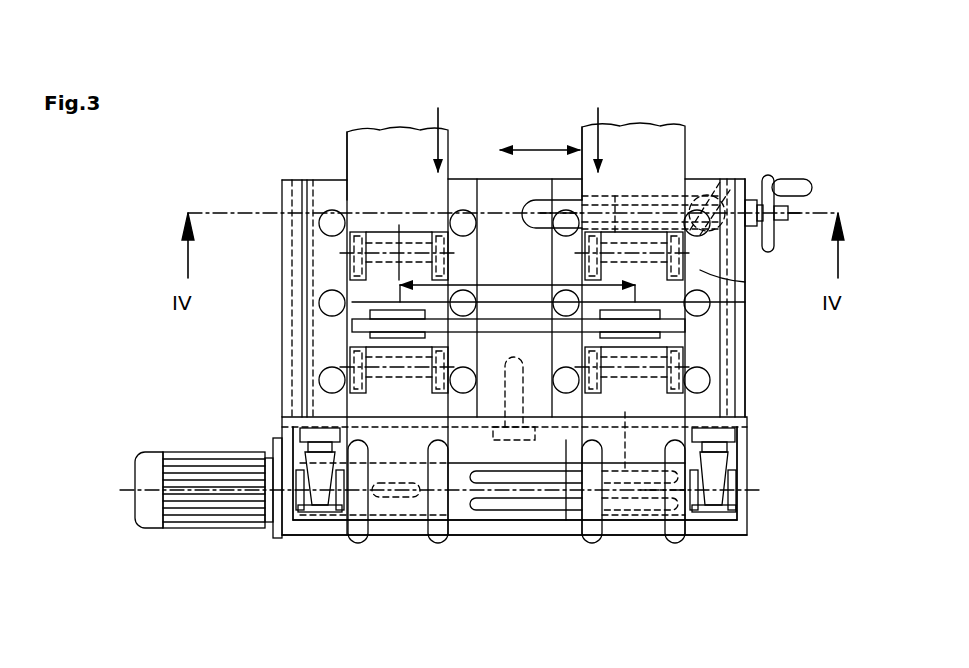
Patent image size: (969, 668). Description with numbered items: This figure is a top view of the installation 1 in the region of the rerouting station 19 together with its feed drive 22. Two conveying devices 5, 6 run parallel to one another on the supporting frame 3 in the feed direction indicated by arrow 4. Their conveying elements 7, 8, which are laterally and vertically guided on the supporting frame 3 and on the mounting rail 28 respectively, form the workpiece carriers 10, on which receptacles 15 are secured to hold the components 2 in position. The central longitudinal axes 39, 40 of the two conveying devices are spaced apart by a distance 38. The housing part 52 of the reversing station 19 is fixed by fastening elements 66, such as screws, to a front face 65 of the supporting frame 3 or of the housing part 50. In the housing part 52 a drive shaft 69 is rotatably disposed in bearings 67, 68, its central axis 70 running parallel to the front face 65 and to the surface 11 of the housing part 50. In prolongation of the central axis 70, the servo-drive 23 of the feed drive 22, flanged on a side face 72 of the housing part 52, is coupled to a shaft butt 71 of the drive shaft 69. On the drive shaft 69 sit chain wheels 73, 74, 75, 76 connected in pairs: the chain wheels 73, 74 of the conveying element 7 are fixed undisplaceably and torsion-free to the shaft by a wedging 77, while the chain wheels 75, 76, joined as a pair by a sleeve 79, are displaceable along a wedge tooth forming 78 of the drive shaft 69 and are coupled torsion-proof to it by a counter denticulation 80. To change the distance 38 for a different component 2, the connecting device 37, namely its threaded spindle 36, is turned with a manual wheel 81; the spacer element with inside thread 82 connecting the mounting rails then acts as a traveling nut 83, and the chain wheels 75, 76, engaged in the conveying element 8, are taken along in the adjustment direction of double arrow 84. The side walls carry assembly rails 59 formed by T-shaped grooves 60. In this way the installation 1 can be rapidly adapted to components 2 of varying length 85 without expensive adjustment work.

The installation 1 is at (792, 98).
The component 2 is at (512, 330).
The supporting frame 3 is at (494, 148).
The arrow 4 is at (440, 108).
The conveying device 5 is at (368, 108).
The conveying device 6 is at (668, 65).
The conveying element 7 is at (388, 150).
The conveying element 8 is at (655, 130).
The workpiece carrier 10 is at (673, 142).
The surface 11 is at (333, 195).
The receptacle 15 is at (372, 310).
The rerouting station 19 is at (760, 530).
The feed drive 22 is at (226, 540).
The servo-drive 23 is at (196, 456).
The mounting rail 28 is at (715, 360).
The threaded spindle 36 is at (718, 198).
The connecting device 37 is at (793, 211).
The distance 38 is at (497, 272).
The central longitudinal axis 39 is at (396, 228).
The central longitudinal axis 40 is at (638, 194).
The housing part 50 is at (490, 190).
The housing part 52 is at (325, 488).
The assembly rail 59 is at (732, 333).
The T-shaped groove 60 is at (728, 400).
The front face 65 is at (572, 422).
The fastening element 66 is at (508, 445).
The bearing 67 is at (302, 497).
The bearing 68 is at (720, 514).
The drive shaft 69 is at (460, 512).
The central axis 70 is at (752, 489).
The shaft butt 71 is at (292, 510).
The side face 72 is at (283, 432).
The chain wheel 73 is at (358, 522).
The chain wheel 74 is at (442, 522).
The chain wheel 75 is at (592, 522).
The chain wheel 76 is at (677, 522).
The wedging 77 is at (400, 497).
The wedge tooth forming 78 is at (547, 505).
The sleeve 79 is at (622, 515).
The counter denticulation 80 is at (627, 470).
The manual wheel 81 is at (795, 186).
The inside thread 82 is at (700, 192).
The traveling nut 83 is at (615, 200).
The double arrow 84 is at (537, 128).
The length 85 is at (525, 284).